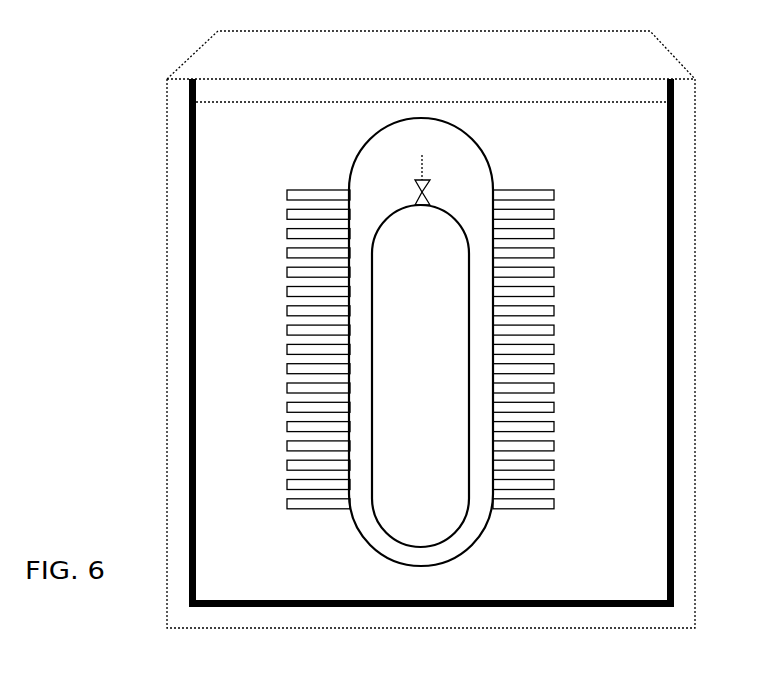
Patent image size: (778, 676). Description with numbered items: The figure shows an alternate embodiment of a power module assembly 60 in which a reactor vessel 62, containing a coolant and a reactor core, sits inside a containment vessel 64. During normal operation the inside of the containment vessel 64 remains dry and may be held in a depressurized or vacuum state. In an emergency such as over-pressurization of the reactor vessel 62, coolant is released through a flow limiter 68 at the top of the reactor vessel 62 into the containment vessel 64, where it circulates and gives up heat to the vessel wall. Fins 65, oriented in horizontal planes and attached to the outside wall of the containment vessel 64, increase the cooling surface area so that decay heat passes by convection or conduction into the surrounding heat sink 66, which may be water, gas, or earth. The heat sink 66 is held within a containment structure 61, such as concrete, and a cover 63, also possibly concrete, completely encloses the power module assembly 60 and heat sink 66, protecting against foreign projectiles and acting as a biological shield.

The power module assembly 60 is at (247, 188).
The containment structure 61 is at (158, 323).
The reactor vessel 62 is at (465, 528).
The cover 63 is at (238, 53).
The containment vessel 64 is at (502, 156).
The fins 65 is at (573, 192).
The heat sink 66 is at (263, 551).
The flow limiter 68 is at (412, 173).